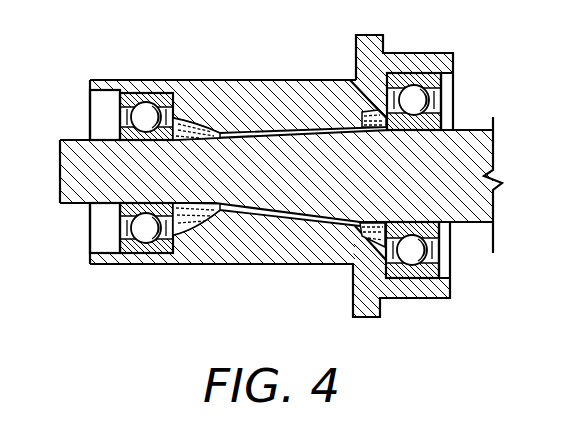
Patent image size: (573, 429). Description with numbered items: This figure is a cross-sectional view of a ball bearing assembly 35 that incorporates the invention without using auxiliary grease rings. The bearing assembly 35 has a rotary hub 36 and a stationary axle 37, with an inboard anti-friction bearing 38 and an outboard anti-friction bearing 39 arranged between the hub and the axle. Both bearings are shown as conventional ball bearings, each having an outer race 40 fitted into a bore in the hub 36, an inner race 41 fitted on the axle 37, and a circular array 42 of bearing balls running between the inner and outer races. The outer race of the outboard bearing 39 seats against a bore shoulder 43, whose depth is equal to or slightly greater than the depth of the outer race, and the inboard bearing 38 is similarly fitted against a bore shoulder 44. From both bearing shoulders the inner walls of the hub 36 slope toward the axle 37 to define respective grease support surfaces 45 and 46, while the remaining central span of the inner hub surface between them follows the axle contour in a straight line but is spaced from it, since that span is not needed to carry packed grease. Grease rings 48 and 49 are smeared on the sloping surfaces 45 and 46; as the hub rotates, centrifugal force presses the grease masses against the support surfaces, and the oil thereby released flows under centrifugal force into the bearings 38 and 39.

The bearing assembly 35 is at (418, 49).
The rotary hub 36 is at (270, 82).
The stationary axle 37 is at (494, 148).
The inboard anti-friction bearing 38 is at (455, 93).
The outboard anti-friction bearing 39 is at (108, 173).
The outer race 40 is at (118, 96).
The inner race 41 is at (118, 130).
The circular array of bearing balls 42 is at (147, 248).
The bore shoulder 43 is at (188, 86).
The bore shoulder 44 is at (356, 279).
The grease support surface 45 is at (197, 237).
The grease support surface 46 is at (372, 118).
The grease ring 48 is at (197, 212).
The grease ring 49 is at (372, 130).